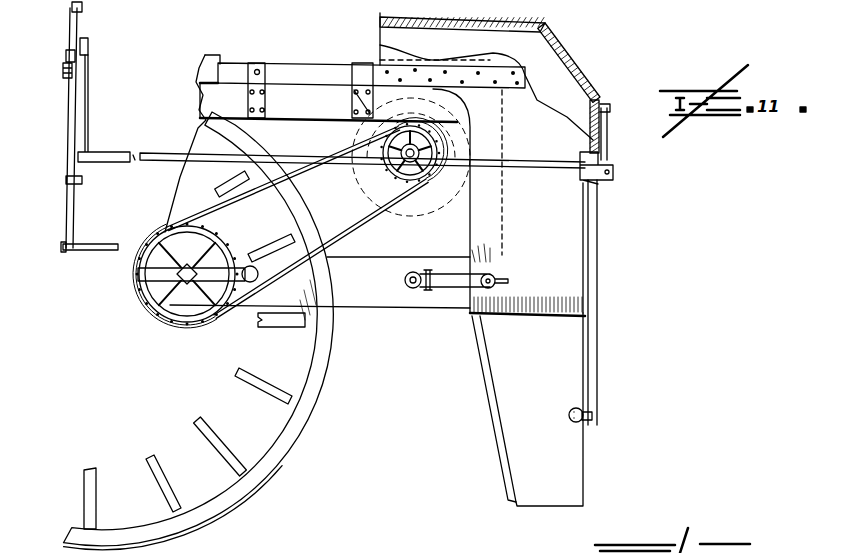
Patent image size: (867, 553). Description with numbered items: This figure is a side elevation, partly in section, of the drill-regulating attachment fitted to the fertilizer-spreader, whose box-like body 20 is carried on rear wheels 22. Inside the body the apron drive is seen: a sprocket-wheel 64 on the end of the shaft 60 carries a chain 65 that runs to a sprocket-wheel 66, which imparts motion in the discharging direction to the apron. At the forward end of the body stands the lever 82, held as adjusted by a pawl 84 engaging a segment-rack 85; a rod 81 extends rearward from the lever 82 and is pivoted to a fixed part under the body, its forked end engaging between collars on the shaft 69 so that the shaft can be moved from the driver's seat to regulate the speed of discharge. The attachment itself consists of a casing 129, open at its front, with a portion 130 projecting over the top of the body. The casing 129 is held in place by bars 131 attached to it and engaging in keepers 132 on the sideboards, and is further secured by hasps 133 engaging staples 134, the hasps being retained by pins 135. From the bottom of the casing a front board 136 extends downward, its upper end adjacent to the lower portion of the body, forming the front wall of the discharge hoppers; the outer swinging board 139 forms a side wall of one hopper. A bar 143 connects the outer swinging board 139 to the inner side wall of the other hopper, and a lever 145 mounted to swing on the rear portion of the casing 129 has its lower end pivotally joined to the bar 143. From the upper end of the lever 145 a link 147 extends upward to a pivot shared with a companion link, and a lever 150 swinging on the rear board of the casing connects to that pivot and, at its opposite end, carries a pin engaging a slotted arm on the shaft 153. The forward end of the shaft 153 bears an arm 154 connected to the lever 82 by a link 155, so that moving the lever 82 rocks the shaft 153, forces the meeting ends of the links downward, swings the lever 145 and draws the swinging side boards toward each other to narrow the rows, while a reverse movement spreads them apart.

The box-like body 20 is at (379, 170).
The rear wheels 22 is at (297, 447).
The shaft 60 is at (418, 151).
The sprocket-wheel 64 is at (392, 172).
The chain 65 is at (350, 240).
The sprocket-wheel 66 is at (219, 242).
The shaft 69 is at (178, 320).
The rod 81 is at (83, 253).
The lever 82 is at (67, 219).
The pawl 84 is at (66, 55).
The segment-rack 85 is at (63, 72).
The casing 129 is at (563, 62).
The projecting portion 130 is at (380, 20).
The bars 131 is at (297, 64).
The keepers 132 is at (257, 69).
The hasps 133 is at (453, 285).
The staples 134 is at (411, 288).
The pins 135 is at (424, 291).
The front board 136 is at (495, 436).
The outer swinging board 139 is at (531, 409).
The bar 143 is at (585, 422).
The lever 145 is at (597, 365).
The link 147 is at (608, 139).
The lever 150 is at (598, 107).
The shaft 153 is at (536, 170).
The arm 154 is at (89, 110).
The link 155 is at (89, 47).